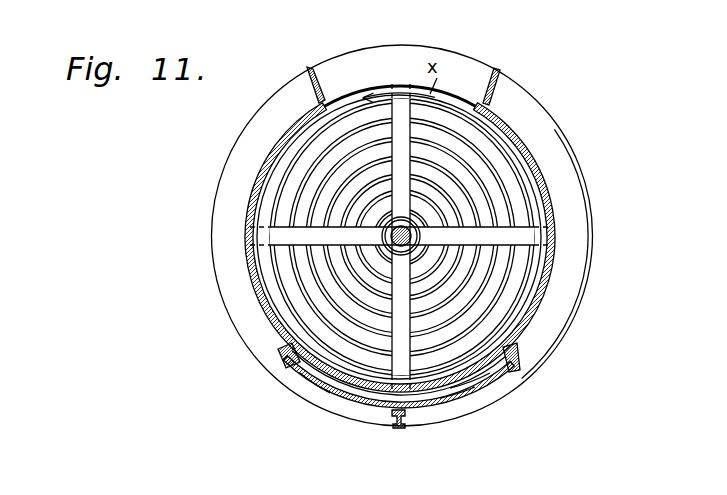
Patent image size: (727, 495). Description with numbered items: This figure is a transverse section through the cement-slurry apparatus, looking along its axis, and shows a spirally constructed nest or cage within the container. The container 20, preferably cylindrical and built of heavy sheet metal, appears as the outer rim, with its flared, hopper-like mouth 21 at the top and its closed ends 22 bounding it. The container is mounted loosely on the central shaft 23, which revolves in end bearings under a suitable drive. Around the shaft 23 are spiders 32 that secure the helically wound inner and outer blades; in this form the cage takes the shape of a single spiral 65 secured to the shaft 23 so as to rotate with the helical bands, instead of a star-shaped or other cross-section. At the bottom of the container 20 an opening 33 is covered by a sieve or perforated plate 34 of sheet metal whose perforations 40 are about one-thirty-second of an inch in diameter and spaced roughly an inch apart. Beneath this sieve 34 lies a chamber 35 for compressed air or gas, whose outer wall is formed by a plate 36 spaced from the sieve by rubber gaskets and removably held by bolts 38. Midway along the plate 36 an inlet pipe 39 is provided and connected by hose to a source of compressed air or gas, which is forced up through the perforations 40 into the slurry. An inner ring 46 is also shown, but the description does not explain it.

The container 20 is at (548, 163).
The flared mouth 21 is at (499, 82).
The closed ends 22 is at (405, 50).
The shaft 23 is at (391, 242).
The spiders 32 is at (282, 231).
The opening 33 is at (302, 377).
The sieve 34 is at (452, 391).
The chamber 35 is at (362, 400).
The plate 36 is at (317, 390).
The bolts 38 is at (519, 371).
The inlet pipe 39 is at (401, 428).
The perforations 40 is at (459, 402).
The inner rim ring 46 is at (541, 208).
The single spiral 65 is at (440, 262).